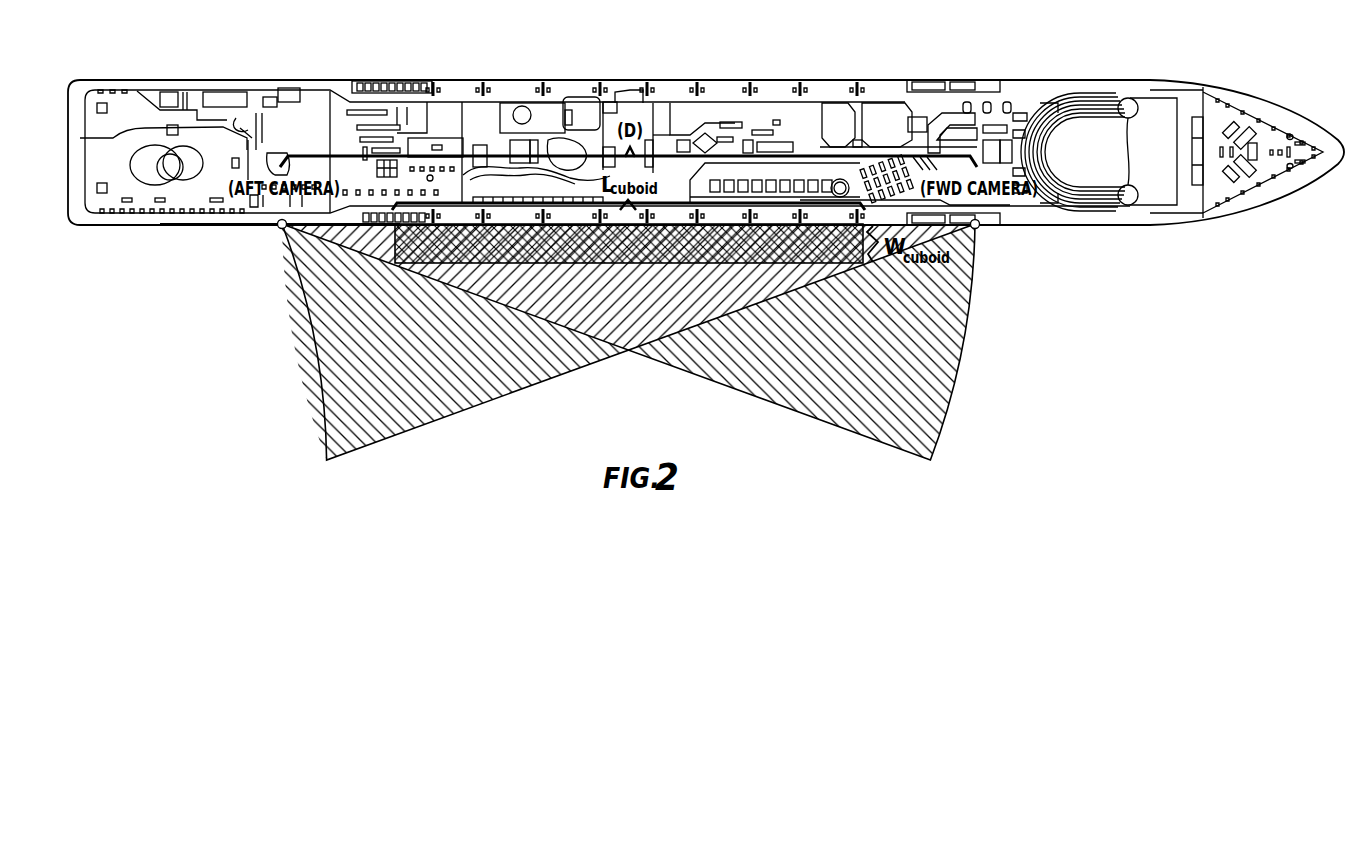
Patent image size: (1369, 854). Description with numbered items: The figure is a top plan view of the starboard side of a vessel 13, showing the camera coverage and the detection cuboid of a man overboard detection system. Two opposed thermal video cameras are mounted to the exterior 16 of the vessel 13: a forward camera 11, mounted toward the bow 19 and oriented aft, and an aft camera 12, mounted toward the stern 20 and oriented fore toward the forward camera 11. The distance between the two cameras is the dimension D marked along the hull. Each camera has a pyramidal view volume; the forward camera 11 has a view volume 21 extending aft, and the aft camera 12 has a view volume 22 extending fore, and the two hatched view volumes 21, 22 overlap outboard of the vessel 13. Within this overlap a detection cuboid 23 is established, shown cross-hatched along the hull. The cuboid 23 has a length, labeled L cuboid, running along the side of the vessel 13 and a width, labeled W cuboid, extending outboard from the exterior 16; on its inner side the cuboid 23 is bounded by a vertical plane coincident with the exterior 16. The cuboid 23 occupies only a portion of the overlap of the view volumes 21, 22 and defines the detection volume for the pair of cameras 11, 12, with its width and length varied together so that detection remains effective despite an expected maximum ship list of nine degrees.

The forward camera 11 is at (978, 227).
The aft camera 12 is at (282, 228).
The vessel 13 is at (1123, 97).
The exterior 16 is at (168, 226).
The bow 19 is at (1336, 170).
The stern 20 is at (70, 222).
The view volume 21 is at (430, 425).
The view volume 22 is at (795, 418).
The detection cuboid 23 is at (432, 266).